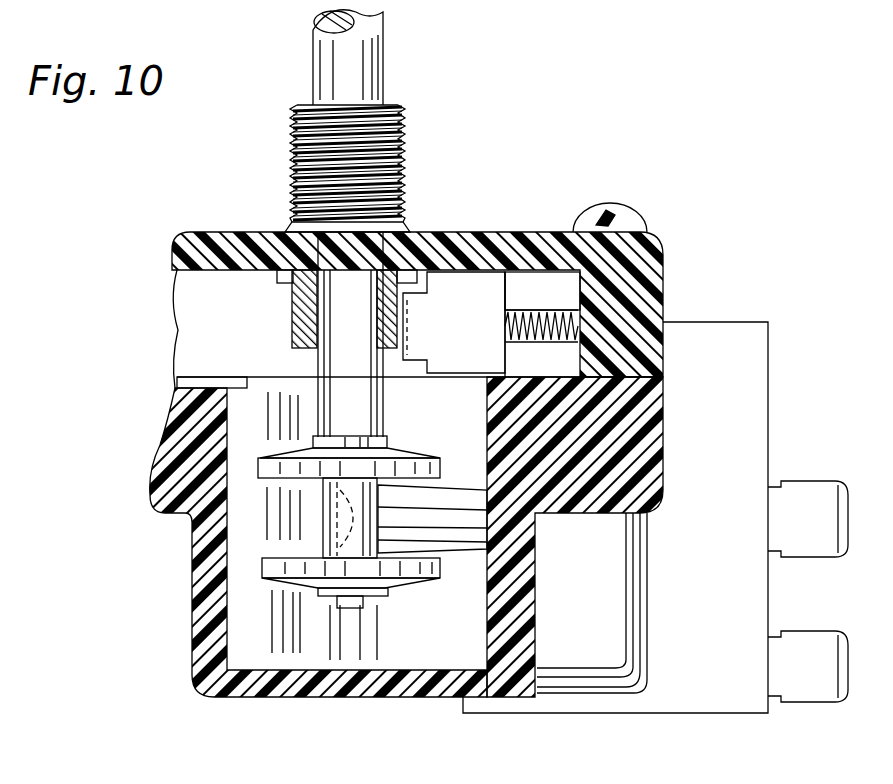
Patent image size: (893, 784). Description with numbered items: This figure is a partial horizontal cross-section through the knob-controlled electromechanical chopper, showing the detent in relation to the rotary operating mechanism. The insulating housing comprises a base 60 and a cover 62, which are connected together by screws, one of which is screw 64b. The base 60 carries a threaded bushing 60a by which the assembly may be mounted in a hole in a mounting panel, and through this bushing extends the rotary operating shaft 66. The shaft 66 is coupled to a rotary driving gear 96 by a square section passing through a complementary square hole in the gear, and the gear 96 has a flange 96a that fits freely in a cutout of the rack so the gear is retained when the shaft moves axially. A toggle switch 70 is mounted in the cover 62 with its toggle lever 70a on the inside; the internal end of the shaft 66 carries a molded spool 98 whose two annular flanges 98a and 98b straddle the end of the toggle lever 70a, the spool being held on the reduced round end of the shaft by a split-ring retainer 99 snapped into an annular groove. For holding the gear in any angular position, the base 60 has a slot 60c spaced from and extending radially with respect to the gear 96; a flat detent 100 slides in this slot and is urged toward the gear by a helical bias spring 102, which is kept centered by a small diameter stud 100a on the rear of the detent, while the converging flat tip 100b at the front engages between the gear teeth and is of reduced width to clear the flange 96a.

The base 60 is at (200, 232).
The threaded bushing 60a is at (388, 160).
The slot 60c is at (546, 284).
The cover 62 is at (193, 588).
The screw 64b is at (620, 222).
The rotary operating shaft 66 is at (372, 58).
The toggle switch 70 is at (752, 408).
The toggle lever 70a is at (455, 497).
The rotary driving gear 96 is at (293, 315).
The flange 96a is at (280, 278).
The molded spool 98 is at (328, 512).
The annular flange 98a is at (266, 470).
The annular flange 98b is at (266, 590).
The split-ring retainer 99 is at (372, 598).
The flat detent 100 is at (445, 275).
The stud 100a is at (516, 306).
The converging flat tip 100b is at (408, 318).
The helical bias spring 102 is at (573, 340).